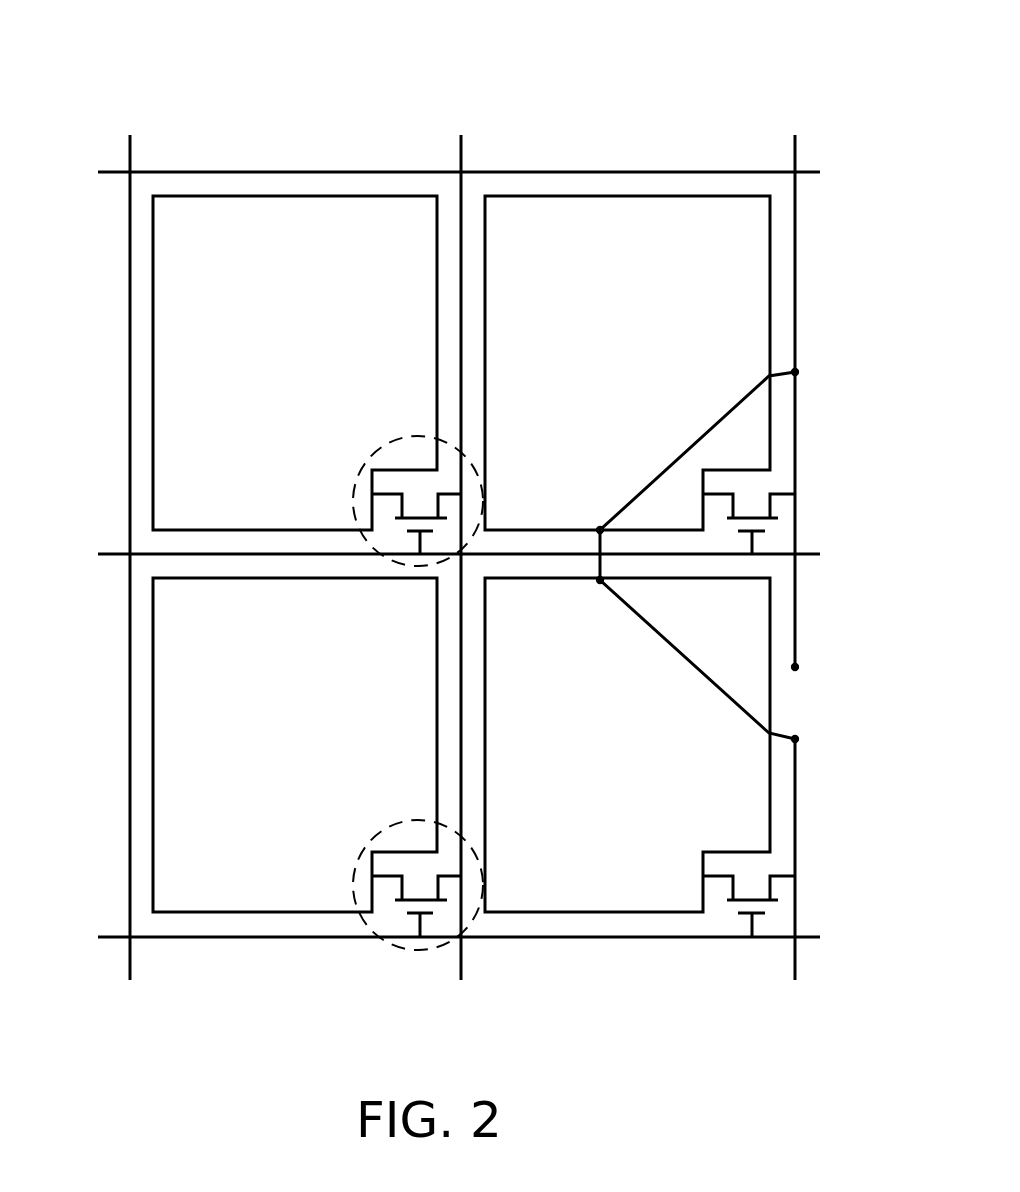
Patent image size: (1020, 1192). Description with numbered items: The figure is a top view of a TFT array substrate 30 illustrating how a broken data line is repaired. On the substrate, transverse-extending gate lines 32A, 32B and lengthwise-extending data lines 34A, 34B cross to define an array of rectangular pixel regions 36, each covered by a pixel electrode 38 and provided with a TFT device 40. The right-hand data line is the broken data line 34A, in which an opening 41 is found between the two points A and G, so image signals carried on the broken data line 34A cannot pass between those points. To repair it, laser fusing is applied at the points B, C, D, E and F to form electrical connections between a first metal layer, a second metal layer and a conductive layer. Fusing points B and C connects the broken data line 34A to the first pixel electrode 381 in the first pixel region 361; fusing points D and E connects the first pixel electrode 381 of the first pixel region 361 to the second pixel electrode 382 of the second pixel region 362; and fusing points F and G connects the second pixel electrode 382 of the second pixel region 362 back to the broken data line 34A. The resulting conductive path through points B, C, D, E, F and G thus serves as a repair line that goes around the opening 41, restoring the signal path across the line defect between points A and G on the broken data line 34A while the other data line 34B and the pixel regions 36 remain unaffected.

The TFT array substrate 30 is at (651, 108).
The gate line 32A is at (116, 556).
The gate line 32B is at (116, 939).
The broken data line 34A is at (797, 960).
The data line 34B is at (463, 958).
The pixel region 36 is at (220, 380).
The first pixel region 361 is at (662, 295).
The second pixel region 362 is at (690, 797).
The pixel electrode 38 is at (308, 371).
The first pixel electrode 381 is at (650, 371).
The second pixel electrode 382 is at (656, 746).
The TFT device 40 is at (357, 478).
The opening 41 is at (803, 707).